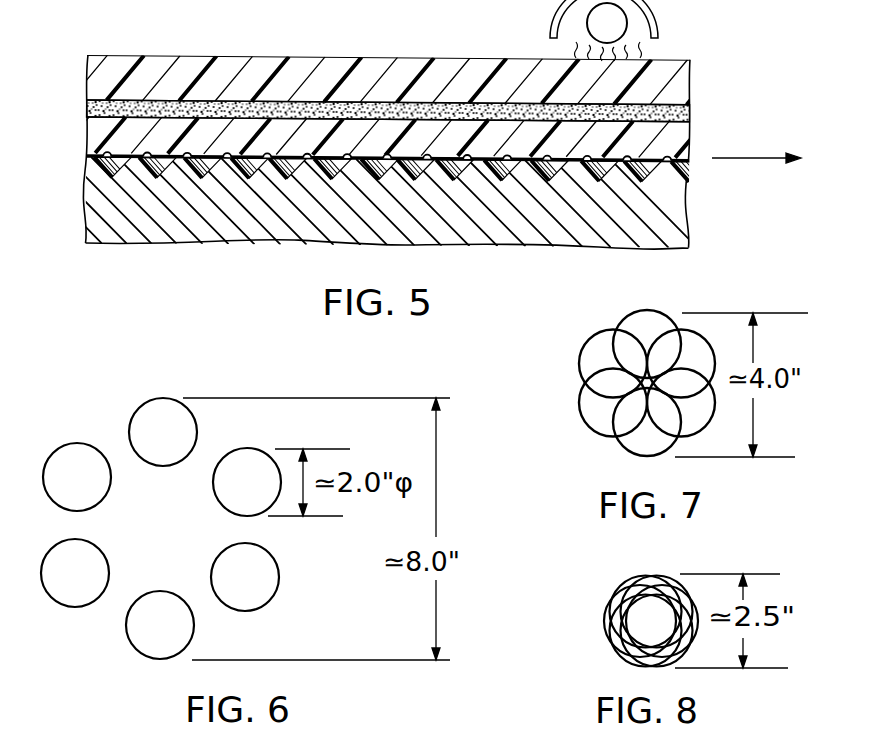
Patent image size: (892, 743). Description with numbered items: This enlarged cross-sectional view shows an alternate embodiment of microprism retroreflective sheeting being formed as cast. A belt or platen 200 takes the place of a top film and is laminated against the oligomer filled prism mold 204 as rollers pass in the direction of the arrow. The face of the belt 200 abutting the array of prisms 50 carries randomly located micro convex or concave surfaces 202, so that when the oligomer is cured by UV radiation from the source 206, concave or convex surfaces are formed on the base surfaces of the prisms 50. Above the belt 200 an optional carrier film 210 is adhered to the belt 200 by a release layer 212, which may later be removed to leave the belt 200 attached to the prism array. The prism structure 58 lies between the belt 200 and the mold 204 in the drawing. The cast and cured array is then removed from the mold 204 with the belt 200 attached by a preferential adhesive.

The micro convex or concave surfaces 202 is at (368, 165).
The UV radiation source 206 is at (627, 17).
The carrier film 210 is at (690, 84).
The release layer 212 is at (690, 114).
The belt or platen 200 is at (690, 141).
The microstructured tooth layer 58 is at (690, 178).
The prism mold 204 is at (690, 217).
The prisms 50 is at (228, 173).